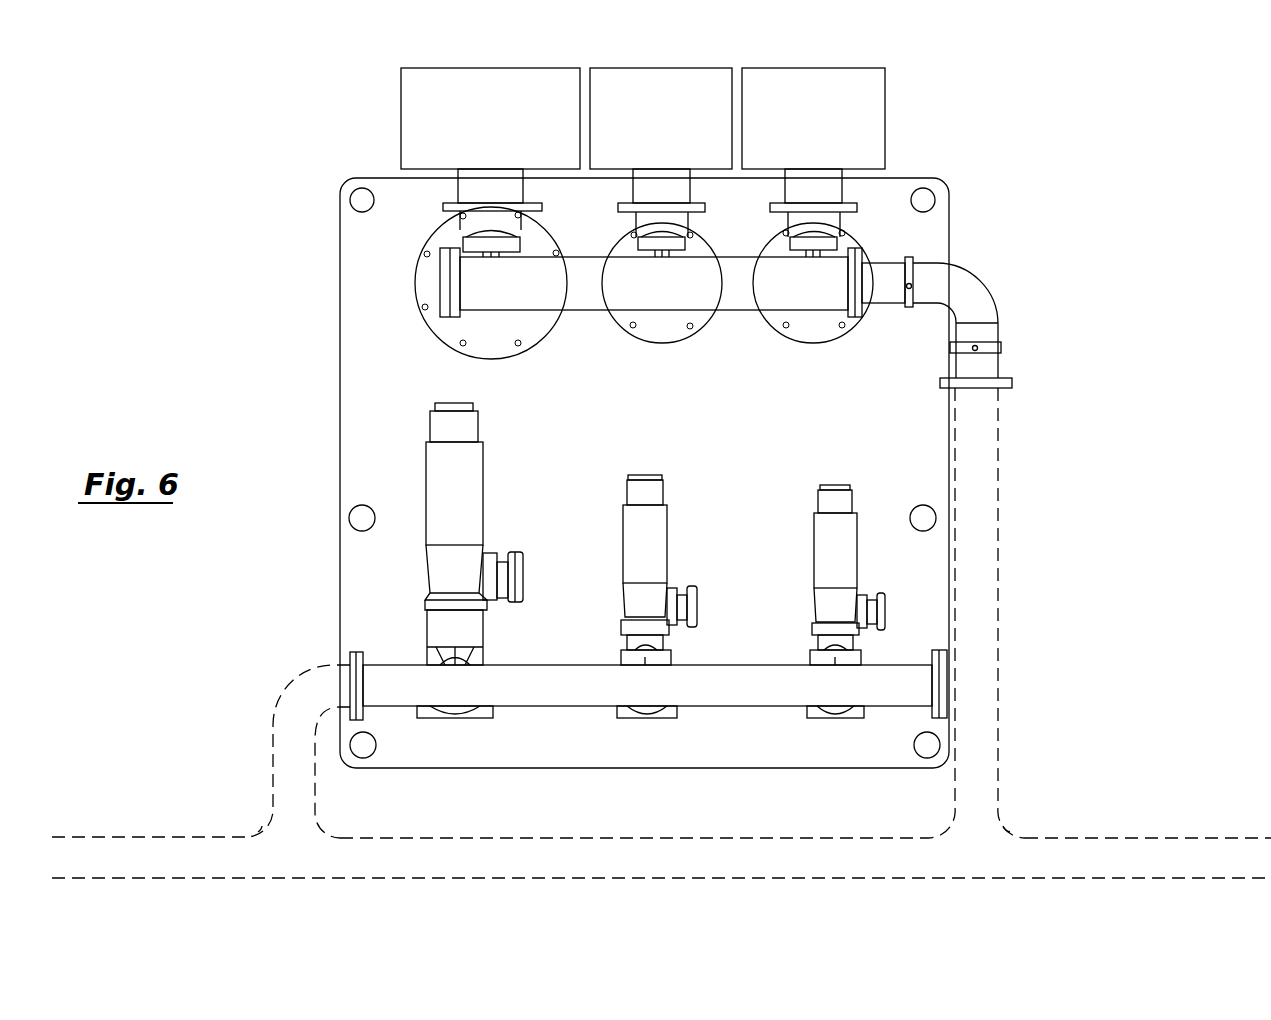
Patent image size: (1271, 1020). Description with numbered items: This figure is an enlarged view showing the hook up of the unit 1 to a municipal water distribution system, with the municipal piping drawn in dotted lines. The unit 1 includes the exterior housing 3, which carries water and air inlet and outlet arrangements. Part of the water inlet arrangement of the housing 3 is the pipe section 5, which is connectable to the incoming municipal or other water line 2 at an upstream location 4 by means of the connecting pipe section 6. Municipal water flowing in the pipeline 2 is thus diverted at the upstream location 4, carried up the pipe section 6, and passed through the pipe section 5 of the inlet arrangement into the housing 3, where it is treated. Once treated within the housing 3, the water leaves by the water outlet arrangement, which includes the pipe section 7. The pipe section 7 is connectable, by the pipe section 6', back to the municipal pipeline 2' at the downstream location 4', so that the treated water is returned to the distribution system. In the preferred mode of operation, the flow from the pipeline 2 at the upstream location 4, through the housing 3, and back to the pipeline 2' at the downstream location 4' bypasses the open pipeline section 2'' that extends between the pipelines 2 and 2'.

The unit 1 is at (1011, 158).
The municipal water line 2 is at (1148, 802).
The municipal pipeline 2' is at (149, 792).
The open pipeline section 2'' is at (634, 808).
The exterior housing 3 is at (339, 272).
The upstream location 4 is at (1037, 800).
The downstream location 4' is at (232, 801).
The pipe section 5 is at (672, 299).
The connecting pipe section 6 is at (998, 613).
The connecting pipe section 6' is at (282, 751).
The pipe section 7 is at (656, 701).